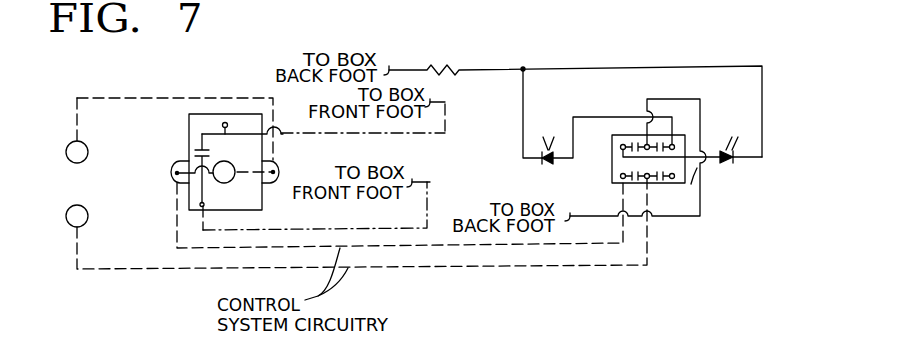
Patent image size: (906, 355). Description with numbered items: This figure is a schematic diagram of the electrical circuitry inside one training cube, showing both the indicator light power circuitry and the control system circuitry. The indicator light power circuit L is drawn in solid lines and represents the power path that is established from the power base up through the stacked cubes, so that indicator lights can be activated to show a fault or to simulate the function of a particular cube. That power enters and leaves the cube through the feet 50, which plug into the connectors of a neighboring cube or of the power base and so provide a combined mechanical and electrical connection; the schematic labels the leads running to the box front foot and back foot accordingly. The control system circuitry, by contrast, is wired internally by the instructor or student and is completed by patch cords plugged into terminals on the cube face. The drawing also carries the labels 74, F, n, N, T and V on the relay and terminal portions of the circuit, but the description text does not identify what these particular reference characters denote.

The feet 50 is at (434, 96).
The relay switch 74 is at (681, 146).
The indicator light power circuit L is at (719, 57).
The front foot photodiode F is at (598, 120).
The photodiode n is at (741, 150).
The relay housing outline N is at (638, 157).
The terminal to box back foot T is at (392, 60).
The terminal to box back foot V is at (568, 226).